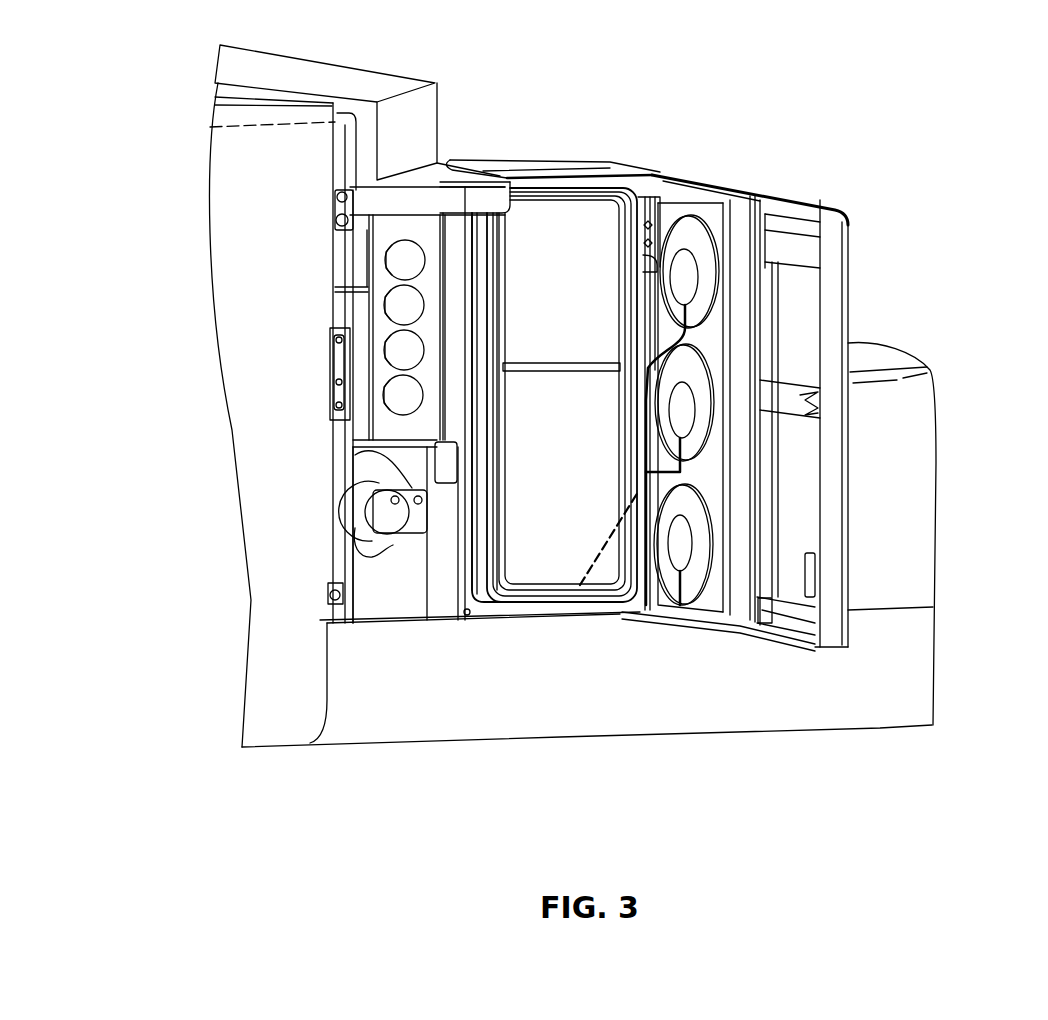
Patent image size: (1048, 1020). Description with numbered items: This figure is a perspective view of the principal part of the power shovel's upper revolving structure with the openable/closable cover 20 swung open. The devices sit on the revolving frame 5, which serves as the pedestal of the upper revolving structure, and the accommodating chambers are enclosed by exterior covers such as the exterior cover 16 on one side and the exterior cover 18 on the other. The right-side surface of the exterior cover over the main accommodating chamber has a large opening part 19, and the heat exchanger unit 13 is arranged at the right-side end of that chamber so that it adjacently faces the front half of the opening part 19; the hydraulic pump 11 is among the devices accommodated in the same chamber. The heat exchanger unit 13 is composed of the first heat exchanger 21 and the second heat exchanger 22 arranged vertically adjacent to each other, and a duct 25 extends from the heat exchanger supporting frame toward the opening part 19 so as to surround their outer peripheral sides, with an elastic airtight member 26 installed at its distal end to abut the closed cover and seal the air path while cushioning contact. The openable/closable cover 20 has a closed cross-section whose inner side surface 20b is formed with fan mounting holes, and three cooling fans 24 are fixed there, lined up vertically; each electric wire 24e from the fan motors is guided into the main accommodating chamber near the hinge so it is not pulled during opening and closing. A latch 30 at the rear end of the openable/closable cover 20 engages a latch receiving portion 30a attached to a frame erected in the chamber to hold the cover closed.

The revolving frame 5 is at (693, 687).
The hydraulic pump 11 is at (407, 527).
The heat exchanger unit 13 is at (578, 185).
The exterior cover 16 is at (237, 222).
The exterior cover 18 is at (907, 502).
The opening part 19 is at (553, 135).
The openable/closable cover 20 is at (728, 176).
The inner side surface 20b is at (722, 218).
The first heat exchanger 21 is at (543, 227).
The second heat exchanger 22 is at (553, 547).
The cooling fan 24 is at (687, 230).
The electric wire 24e is at (658, 337).
The duct 25 is at (473, 513).
The airtight member 26 is at (500, 487).
The latch 30 is at (818, 395).
The latch receiving portion 30a is at (333, 380).